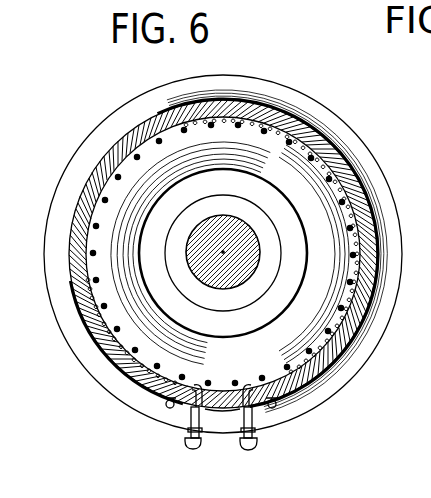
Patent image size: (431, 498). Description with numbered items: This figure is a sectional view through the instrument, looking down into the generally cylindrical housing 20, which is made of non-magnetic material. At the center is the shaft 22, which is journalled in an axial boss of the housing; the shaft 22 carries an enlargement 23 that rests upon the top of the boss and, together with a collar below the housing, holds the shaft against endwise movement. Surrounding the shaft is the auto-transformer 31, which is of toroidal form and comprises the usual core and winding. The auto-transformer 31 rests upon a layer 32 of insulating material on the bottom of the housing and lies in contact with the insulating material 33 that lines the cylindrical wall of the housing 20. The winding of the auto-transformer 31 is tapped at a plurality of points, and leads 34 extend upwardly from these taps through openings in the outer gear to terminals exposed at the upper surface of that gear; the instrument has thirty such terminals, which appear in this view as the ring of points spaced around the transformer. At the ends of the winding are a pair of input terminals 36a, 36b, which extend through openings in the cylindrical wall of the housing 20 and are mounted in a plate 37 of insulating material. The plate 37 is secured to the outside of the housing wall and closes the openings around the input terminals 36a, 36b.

The housing 20 is at (87, 322).
The shaft 22 is at (215, 250).
The enlargement 23 is at (254, 247).
The auto-transformer 31 is at (269, 331).
The layer of insulating material 32 is at (153, 273).
The insulating material 33 is at (117, 343).
The leads 34 is at (158, 367).
The input terminal 36a is at (193, 450).
The input terminal 36b is at (255, 450).
The plate of insulating material 37 is at (222, 408).